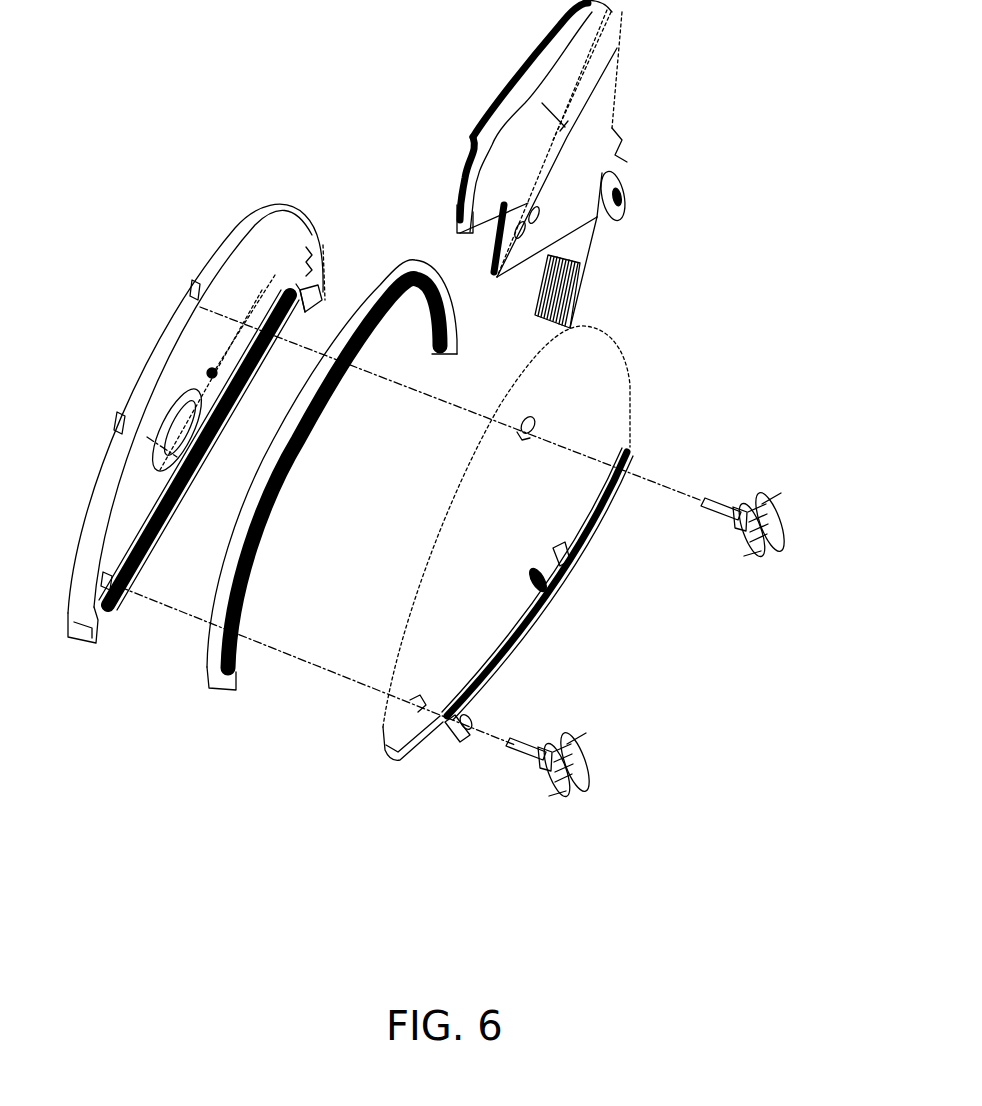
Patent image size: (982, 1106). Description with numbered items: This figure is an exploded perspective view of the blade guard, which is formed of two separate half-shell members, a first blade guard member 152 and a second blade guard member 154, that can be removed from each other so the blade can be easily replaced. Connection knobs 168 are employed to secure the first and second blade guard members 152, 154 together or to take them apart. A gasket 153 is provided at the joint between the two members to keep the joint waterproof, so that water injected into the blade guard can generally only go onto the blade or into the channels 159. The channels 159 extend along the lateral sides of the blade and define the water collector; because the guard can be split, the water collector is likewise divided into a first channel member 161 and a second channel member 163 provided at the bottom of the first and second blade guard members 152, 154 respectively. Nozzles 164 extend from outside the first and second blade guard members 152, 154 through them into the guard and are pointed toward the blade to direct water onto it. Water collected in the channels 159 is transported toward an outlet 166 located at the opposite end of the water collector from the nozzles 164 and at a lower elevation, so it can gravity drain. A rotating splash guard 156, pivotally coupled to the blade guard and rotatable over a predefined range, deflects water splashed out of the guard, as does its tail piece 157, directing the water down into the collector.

The first blade guard member 152 is at (503, 607).
The gasket 153 is at (220, 660).
The second blade guard member 154 is at (163, 358).
The rotating splash guard 156 is at (607, 157).
The tail piece 157 is at (570, 277).
The channels 159 is at (162, 511).
The first channel member 161 is at (403, 760).
The second channel member 163 is at (97, 620).
The nozzles 164 is at (107, 578).
The outlet 166 is at (320, 297).
The connection knobs 168 is at (770, 527).